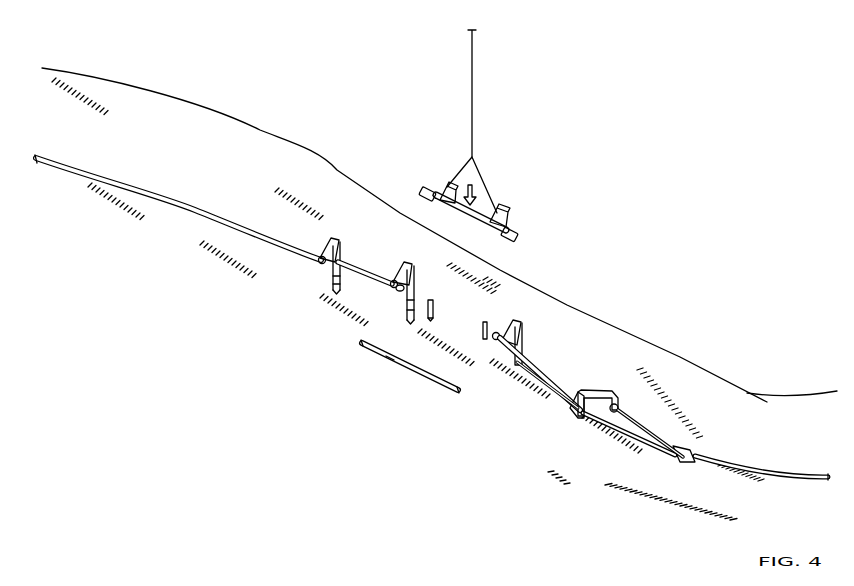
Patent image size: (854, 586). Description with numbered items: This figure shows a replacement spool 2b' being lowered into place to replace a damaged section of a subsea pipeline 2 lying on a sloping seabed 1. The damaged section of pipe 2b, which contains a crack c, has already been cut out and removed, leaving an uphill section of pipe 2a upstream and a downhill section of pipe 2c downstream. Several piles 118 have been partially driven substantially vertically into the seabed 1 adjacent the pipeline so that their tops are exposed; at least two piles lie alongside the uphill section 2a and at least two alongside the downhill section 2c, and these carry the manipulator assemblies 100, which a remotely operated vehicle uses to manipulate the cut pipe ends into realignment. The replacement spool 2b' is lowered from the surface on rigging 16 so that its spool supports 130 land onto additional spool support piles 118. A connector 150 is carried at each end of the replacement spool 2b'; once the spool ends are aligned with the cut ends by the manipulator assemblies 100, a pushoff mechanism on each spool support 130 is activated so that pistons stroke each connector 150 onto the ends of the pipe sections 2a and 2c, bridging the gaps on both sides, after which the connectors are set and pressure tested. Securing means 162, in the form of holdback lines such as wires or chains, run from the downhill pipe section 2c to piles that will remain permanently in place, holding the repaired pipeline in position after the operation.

The seabed 1 is at (162, 324).
The pipeline 2 is at (535, 340).
The uphill section of pipe 2a is at (95, 178).
The section of pipe to be replaced 2b is at (410, 369).
The replacement spool 2b' is at (471, 221).
The downhill section of pipe 2c is at (742, 458).
The rigging 16 is at (476, 110).
The manipulator assembly 100 is at (398, 264).
The pile 118 is at (320, 288).
The spool support 130 is at (446, 187).
The connector 150 is at (421, 192).
The securing means 162 is at (572, 394).
The crack c is at (392, 358).